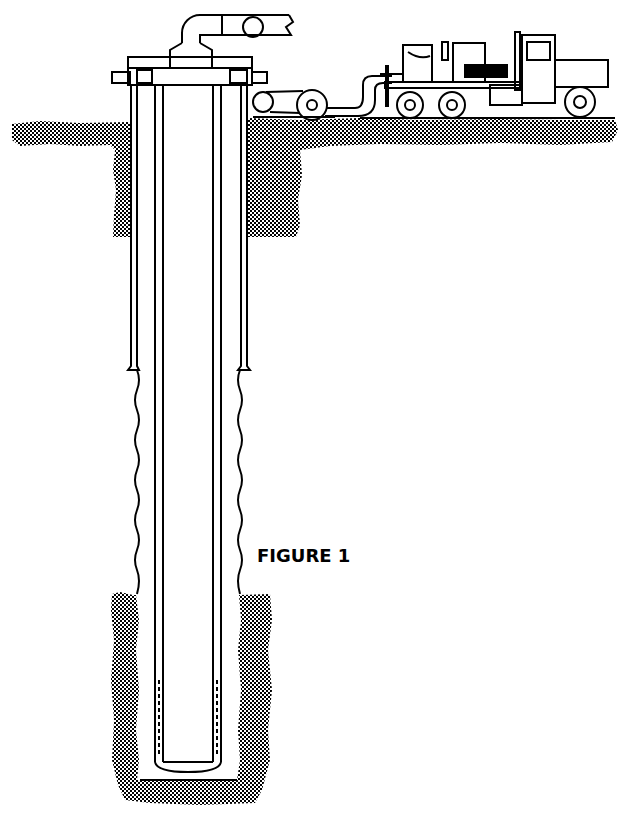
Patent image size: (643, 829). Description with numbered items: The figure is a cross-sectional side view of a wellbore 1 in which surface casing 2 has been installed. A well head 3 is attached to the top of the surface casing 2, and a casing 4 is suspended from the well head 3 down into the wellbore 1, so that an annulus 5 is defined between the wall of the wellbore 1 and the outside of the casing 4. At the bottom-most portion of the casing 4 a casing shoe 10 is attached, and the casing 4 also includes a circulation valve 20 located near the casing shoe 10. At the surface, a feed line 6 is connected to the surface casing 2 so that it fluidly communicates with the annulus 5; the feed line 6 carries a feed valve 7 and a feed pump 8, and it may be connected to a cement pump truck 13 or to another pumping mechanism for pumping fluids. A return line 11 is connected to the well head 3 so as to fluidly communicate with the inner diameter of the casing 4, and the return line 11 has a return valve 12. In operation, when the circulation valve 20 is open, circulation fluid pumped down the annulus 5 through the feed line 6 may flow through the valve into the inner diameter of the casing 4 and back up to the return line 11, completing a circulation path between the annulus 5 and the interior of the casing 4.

The wellbore 1 is at (233, 483).
The surface casing 2 is at (247, 292).
The well head 3 is at (128, 73).
The casing 4 is at (220, 528).
The annulus 5 is at (230, 395).
The feed line 6 is at (290, 146).
The feed valve 7 is at (277, 92).
The feed pump 8 is at (311, 90).
The casing shoe 10 is at (237, 777).
The return line 11 is at (178, 44).
The return valve 12 is at (261, 37).
The cement pump truck 13 is at (477, 43).
The circulation valve 20 is at (217, 705).